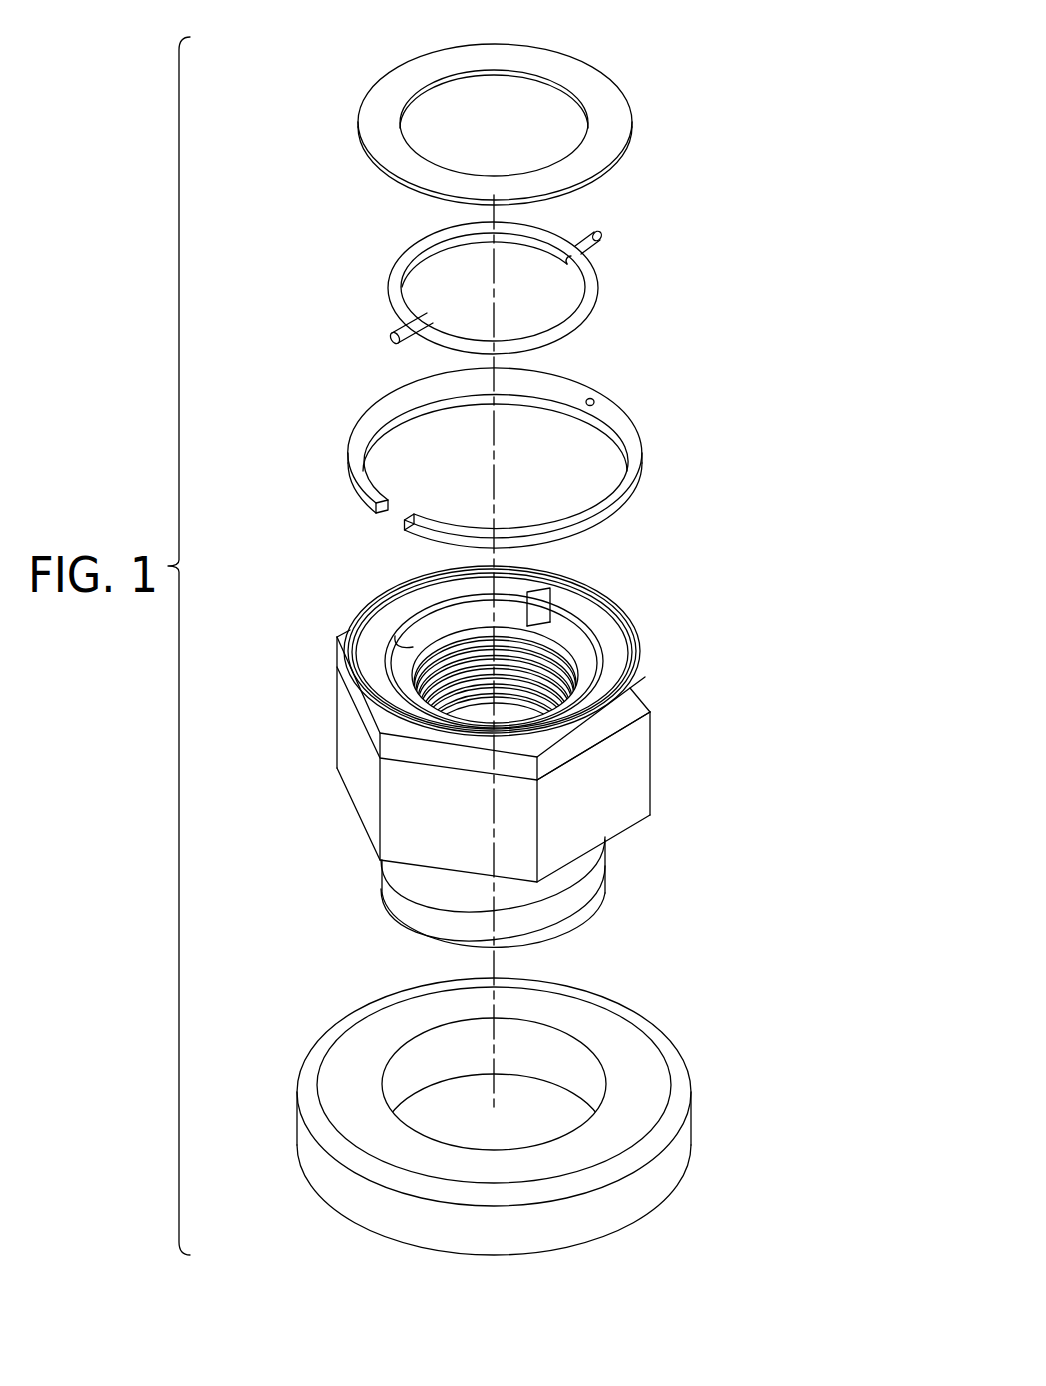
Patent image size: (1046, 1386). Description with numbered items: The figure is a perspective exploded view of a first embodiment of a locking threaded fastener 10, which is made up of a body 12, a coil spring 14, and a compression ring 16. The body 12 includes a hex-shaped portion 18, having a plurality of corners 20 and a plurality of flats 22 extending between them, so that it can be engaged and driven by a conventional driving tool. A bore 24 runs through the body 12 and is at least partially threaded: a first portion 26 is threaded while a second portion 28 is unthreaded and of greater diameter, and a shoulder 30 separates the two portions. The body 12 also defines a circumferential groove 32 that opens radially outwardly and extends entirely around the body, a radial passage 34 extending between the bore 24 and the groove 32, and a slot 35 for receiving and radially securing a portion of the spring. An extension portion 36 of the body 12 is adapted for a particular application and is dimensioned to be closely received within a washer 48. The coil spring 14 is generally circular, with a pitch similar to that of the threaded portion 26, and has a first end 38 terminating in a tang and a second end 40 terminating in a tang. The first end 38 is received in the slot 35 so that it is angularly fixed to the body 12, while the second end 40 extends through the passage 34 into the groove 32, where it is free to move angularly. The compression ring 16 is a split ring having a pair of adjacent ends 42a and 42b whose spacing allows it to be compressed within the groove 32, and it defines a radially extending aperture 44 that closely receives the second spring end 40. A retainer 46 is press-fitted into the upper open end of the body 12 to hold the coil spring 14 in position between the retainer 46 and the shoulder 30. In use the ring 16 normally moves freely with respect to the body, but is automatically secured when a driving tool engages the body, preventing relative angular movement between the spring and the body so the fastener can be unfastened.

The locking threaded fastener 10 is at (762, 185).
The body 12 is at (508, 756).
The coil spring 14 is at (502, 266).
The compression ring 16 is at (548, 444).
The hex-shaped portion 18 is at (622, 768).
The corners 20 is at (611, 794).
The flats 22 is at (612, 812).
The bore 24 is at (435, 623).
The first portion 26 is at (622, 598).
The second portion 28 is at (408, 642).
The shoulder 30 is at (350, 664).
The circumferential groove 32 is at (640, 710).
The radial passage 34 is at (550, 655).
The slot 35 is at (380, 708).
The extension portion 36 is at (585, 905).
The first end 38 is at (400, 322).
The second end 40 is at (592, 236).
The first ring end 42a is at (381, 503).
The second ring end 42b is at (410, 518).
The aperture 44 is at (594, 400).
The retainer 46 is at (603, 68).
The washer 48 is at (697, 1072).